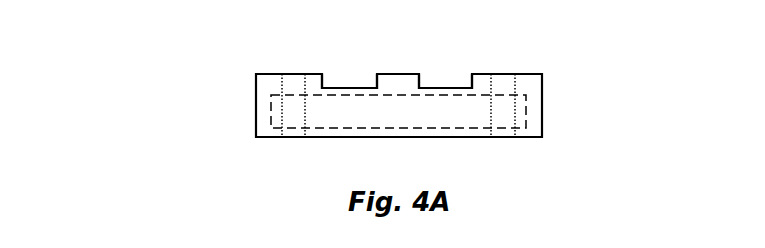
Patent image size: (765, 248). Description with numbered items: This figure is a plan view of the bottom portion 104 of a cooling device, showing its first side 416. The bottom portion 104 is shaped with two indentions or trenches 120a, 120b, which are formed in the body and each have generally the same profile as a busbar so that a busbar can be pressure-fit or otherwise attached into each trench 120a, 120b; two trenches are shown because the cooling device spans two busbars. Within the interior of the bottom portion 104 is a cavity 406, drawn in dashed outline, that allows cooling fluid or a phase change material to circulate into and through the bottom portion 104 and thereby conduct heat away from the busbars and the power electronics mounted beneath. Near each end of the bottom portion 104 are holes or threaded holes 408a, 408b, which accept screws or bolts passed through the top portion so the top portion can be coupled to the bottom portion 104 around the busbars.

The bottom portion 104 is at (157, 92).
The trench 120a is at (350, 73).
The trench 120b is at (440, 75).
The cavity 406 is at (457, 128).
The threaded hole 408a is at (293, 115).
The threaded hole 408b is at (505, 112).
The first side 416 is at (537, 89).